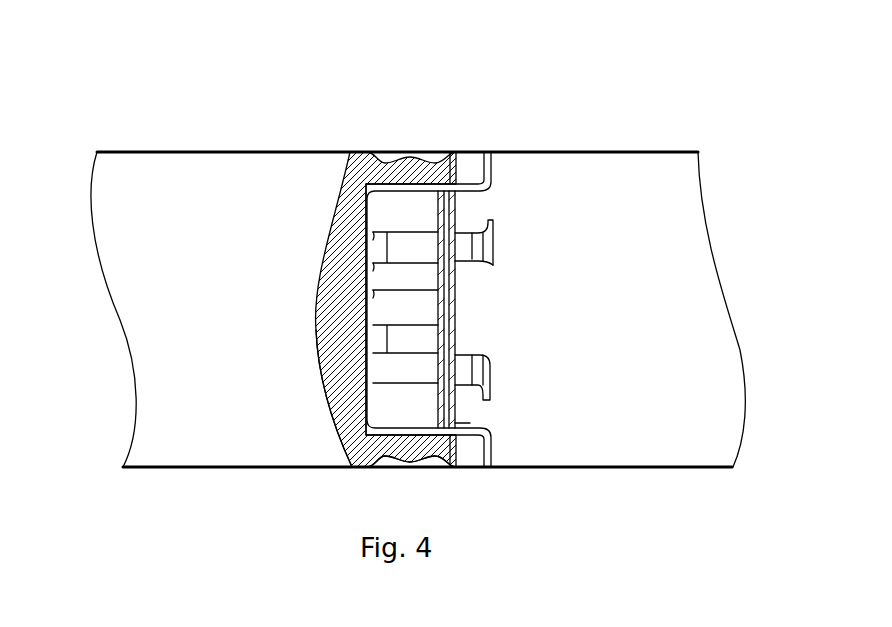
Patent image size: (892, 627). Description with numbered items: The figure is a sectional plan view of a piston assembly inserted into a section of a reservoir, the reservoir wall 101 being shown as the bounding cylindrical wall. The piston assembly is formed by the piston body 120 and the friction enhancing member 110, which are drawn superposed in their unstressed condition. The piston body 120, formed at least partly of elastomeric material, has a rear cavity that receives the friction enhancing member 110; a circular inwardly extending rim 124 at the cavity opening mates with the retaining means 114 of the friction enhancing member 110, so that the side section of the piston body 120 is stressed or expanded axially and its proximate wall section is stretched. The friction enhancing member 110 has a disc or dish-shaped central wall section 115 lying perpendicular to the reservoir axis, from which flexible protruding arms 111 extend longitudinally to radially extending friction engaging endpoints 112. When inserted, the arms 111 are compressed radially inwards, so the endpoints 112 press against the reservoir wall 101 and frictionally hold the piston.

The reservoir wall 101 is at (590, 152).
The friction enhancing member 110 is at (493, 318).
The protruding arms 111 is at (486, 266).
The friction engaging endpoints 112 is at (490, 155).
The retaining means 114 is at (456, 321).
The central wall section 115 is at (355, 240).
The piston body 120 is at (335, 432).
The inwardly extending rim 124 is at (447, 423).